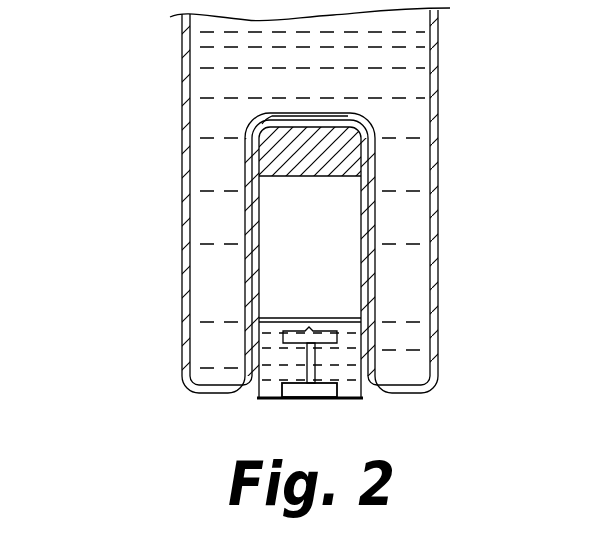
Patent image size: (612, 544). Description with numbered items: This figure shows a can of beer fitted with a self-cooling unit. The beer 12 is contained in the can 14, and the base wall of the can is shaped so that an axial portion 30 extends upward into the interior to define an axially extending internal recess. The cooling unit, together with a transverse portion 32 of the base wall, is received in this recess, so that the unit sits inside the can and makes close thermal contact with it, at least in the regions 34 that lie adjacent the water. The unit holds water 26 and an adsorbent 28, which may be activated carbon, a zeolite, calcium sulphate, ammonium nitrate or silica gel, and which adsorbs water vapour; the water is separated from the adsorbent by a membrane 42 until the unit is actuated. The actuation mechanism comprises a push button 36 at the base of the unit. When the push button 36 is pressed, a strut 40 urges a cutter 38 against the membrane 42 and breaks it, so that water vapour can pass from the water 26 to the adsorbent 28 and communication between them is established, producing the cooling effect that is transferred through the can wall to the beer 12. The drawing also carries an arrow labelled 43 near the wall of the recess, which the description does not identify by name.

The beer 12 is at (205, 116).
The can 14 is at (183, 53).
The water 26 is at (340, 355).
The adsorbent 28 is at (332, 150).
The axial portion of base wall 30 is at (375, 240).
The transverse portion 32 is at (324, 110).
The regions of close thermal contact 34 is at (293, 340).
The push button 36 is at (327, 398).
The cutter 38 is at (298, 345).
The strut 40 is at (313, 367).
The membrane 42 is at (340, 318).
The flow direction arrow 43 is at (235, 171).